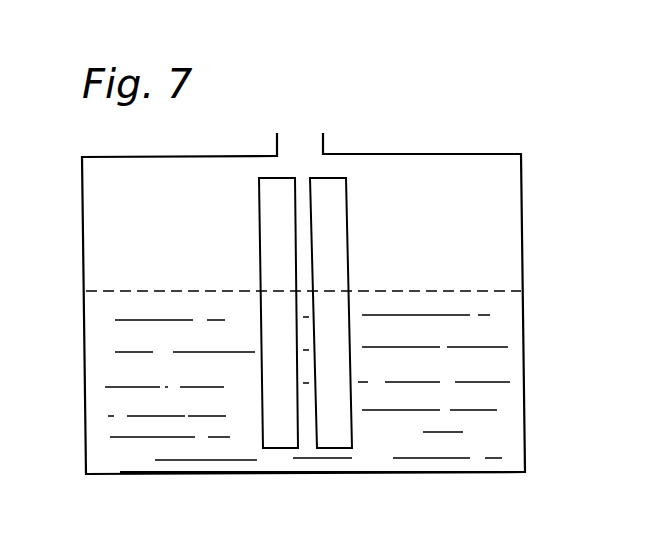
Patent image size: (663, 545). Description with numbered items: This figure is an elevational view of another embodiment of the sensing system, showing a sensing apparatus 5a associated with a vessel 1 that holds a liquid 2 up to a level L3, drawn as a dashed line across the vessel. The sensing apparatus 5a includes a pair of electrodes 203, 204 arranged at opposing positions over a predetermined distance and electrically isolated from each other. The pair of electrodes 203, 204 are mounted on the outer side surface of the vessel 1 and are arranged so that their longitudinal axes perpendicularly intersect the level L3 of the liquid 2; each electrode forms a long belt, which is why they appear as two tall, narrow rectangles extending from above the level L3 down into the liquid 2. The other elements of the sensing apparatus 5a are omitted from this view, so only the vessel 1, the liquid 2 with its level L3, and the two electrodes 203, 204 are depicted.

The vessel 1 is at (449, 153).
The liquid 2 is at (503, 345).
The level L3 is at (446, 291).
The electrode 203 is at (279, 443).
The electrode 204 is at (338, 443).
The sensing apparatus 5a is at (385, 481).